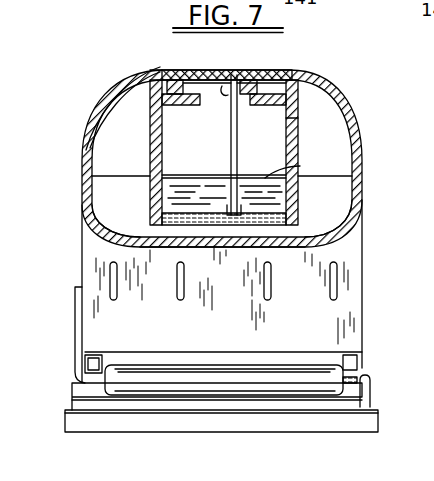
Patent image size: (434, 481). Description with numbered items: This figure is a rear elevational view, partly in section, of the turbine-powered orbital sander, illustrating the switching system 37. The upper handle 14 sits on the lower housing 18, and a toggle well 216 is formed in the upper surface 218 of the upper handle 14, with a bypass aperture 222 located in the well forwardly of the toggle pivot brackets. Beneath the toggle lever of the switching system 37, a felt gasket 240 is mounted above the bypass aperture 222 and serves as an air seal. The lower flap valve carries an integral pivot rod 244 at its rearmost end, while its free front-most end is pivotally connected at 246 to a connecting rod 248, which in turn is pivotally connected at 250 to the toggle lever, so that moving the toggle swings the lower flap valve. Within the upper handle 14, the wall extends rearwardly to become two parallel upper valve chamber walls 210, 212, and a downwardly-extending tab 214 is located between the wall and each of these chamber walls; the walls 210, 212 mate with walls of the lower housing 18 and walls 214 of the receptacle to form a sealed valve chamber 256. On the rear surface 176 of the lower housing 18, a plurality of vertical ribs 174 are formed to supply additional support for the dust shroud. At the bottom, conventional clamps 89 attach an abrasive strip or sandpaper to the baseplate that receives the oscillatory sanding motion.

The upper handle 14 is at (333, 92).
The lower housing 18 is at (137, 228).
The switching system 37 is at (114, 80).
The clamps 89 is at (76, 360).
The vertical ribs 174 is at (334, 266).
The rear surface 176 is at (317, 323).
The upper valve chamber wall 210 is at (147, 137).
The upper valve chamber wall 212 is at (292, 170).
The downwardly-extending tab 214 is at (120, 208).
The toggle well 216 is at (183, 84).
The upper surface 218 is at (158, 72).
The bypass aperture 222 is at (247, 92).
The felt gasket 240 is at (290, 72).
The pivot rod 244 is at (310, 258).
The pivotal connection 246 is at (212, 190).
The connecting rod 248 is at (300, 166).
The pivotal connection 250 is at (222, 90).
The valve chamber 256 is at (284, 124).